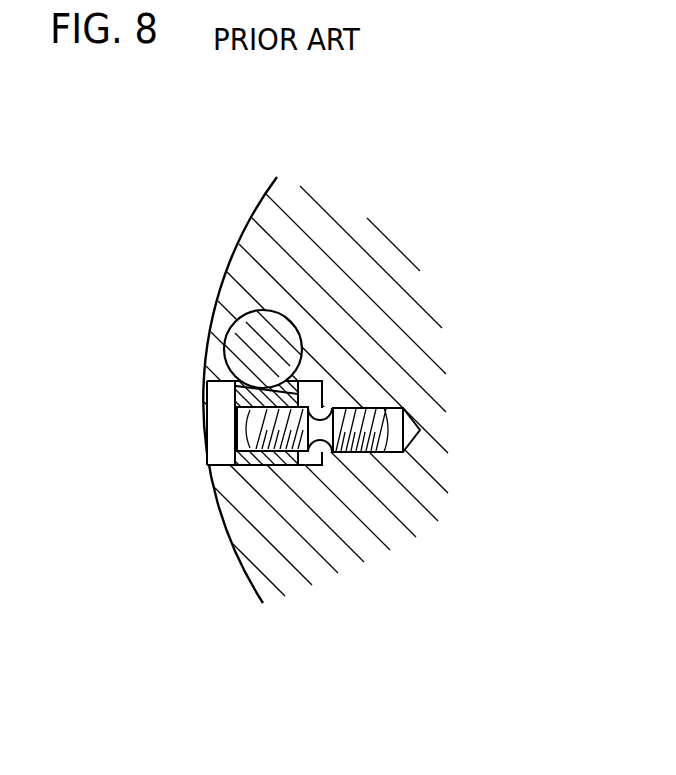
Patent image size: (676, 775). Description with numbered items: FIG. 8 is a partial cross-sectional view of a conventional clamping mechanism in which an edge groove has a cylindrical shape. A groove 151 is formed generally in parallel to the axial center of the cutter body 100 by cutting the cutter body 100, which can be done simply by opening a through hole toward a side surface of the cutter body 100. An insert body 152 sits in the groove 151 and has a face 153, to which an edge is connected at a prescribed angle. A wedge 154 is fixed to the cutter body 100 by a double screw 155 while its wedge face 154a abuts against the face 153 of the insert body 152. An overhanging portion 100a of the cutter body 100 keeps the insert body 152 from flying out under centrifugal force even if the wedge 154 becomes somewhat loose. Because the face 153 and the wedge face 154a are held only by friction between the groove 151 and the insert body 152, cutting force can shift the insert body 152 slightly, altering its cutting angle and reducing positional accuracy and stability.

The cutter body 100 is at (262, 215).
The overhanging portion 100a is at (217, 382).
The groove 151 is at (237, 327).
The insert body 152 is at (232, 350).
The face 153 is at (297, 330).
The wedge 154 is at (245, 462).
The wedge face 154a is at (317, 410).
The double screw 155 is at (370, 408).